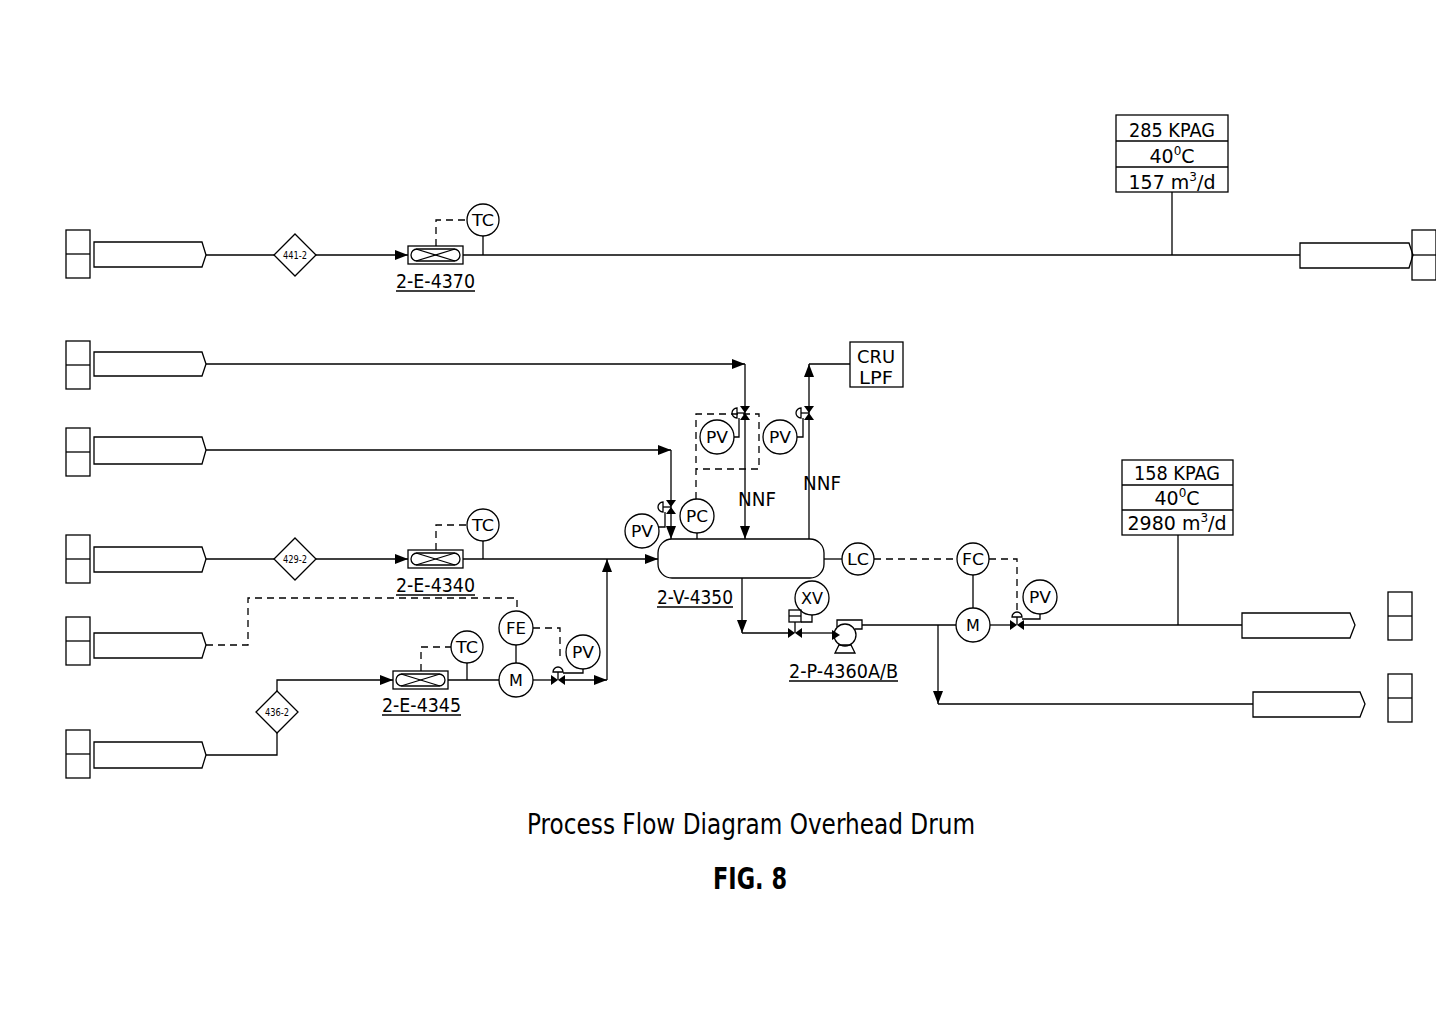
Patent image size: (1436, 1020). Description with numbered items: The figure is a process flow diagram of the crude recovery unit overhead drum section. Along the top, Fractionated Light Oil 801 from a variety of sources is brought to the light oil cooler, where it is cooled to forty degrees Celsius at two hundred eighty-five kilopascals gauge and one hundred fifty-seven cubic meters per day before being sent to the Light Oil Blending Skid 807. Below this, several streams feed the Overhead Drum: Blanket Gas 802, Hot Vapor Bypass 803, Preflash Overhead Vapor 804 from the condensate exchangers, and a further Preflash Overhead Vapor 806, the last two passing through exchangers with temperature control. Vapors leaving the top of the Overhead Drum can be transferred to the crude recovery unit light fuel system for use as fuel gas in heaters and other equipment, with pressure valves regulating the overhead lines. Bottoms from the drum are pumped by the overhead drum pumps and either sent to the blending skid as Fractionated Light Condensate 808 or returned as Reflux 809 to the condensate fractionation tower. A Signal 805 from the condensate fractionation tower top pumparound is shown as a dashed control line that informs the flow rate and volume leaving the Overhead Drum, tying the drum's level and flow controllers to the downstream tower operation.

The Fractionated Light Oil 801 is at (148, 238).
The Blanket Gas 802 is at (150, 347).
The Hot Vapor Bypass 803 is at (150, 434).
The Preflash Overhead Vapor 804 is at (148, 542).
The Signal 805 is at (150, 630).
The Preflash Overhead Vapor 806 is at (148, 738).
The Light Oil Blending Skid 807 is at (1352, 237).
The Fractionated Light Condensate 808 is at (1299, 607).
The Reflux 809 is at (1306, 688).